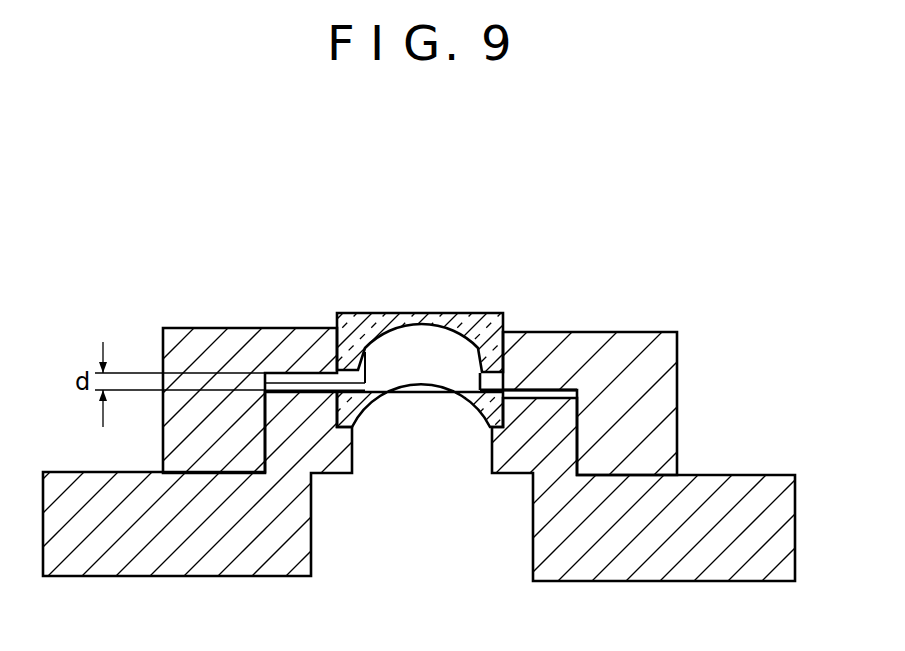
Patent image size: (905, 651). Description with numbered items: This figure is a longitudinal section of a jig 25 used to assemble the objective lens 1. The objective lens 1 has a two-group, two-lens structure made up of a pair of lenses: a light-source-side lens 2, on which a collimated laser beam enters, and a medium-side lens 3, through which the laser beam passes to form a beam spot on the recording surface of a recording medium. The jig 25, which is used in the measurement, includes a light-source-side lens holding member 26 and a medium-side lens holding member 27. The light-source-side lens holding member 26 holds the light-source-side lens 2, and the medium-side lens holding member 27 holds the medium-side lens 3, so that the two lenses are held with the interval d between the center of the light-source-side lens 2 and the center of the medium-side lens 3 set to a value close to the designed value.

The objective lens 1 is at (406, 345).
The light-source-side lens 2 is at (428, 313).
The medium-side lens 3 is at (423, 468).
The jig 25 is at (452, 455).
The light-source-side lens holding member 26 is at (670, 382).
The medium-side lens holding member 27 is at (753, 343).